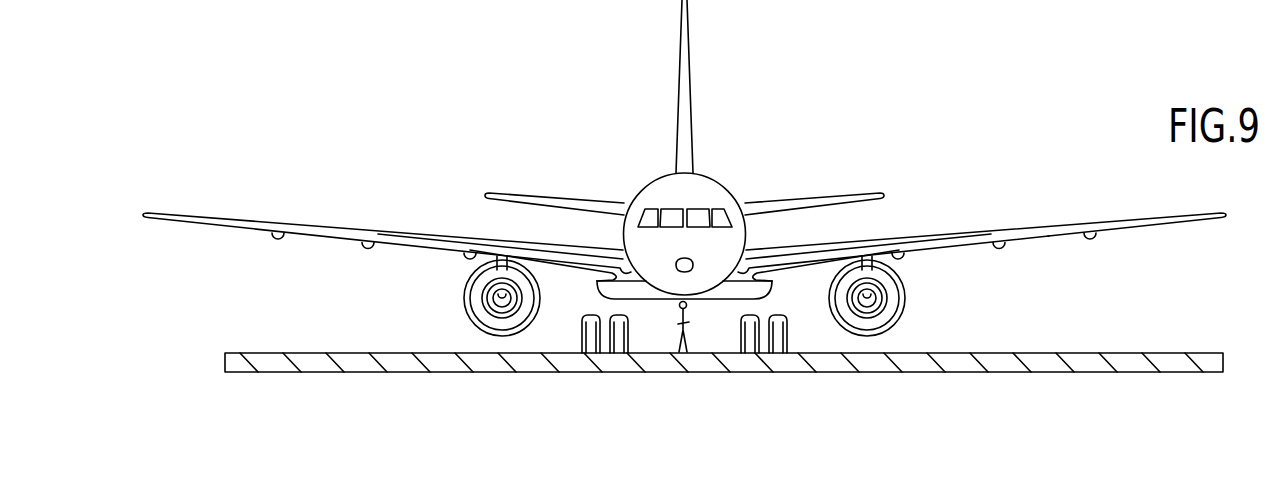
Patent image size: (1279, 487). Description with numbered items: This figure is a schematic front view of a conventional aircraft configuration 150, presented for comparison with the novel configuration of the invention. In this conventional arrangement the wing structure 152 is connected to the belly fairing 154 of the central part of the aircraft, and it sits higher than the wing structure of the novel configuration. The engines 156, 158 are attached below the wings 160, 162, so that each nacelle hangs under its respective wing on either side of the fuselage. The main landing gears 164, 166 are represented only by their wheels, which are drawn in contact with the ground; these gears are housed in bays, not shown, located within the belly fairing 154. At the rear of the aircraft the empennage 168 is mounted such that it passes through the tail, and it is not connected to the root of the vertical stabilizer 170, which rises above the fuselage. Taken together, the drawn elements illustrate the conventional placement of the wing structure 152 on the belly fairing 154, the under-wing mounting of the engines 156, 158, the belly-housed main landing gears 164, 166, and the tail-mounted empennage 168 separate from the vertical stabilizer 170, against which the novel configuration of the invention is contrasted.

The conventional aircraft configuration 150 is at (978, 150).
The wing structure 152 is at (1085, 223).
The belly fairing 154 is at (712, 302).
The engine 156 is at (910, 303).
The engine 158 is at (460, 300).
The wing 160 is at (1048, 236).
The wing 162 is at (338, 238).
The main landing gear 164 is at (780, 353).
The main landing gear 166 is at (625, 353).
The empennage 168 is at (840, 190).
The vertical stabilizer 170 is at (690, 100).